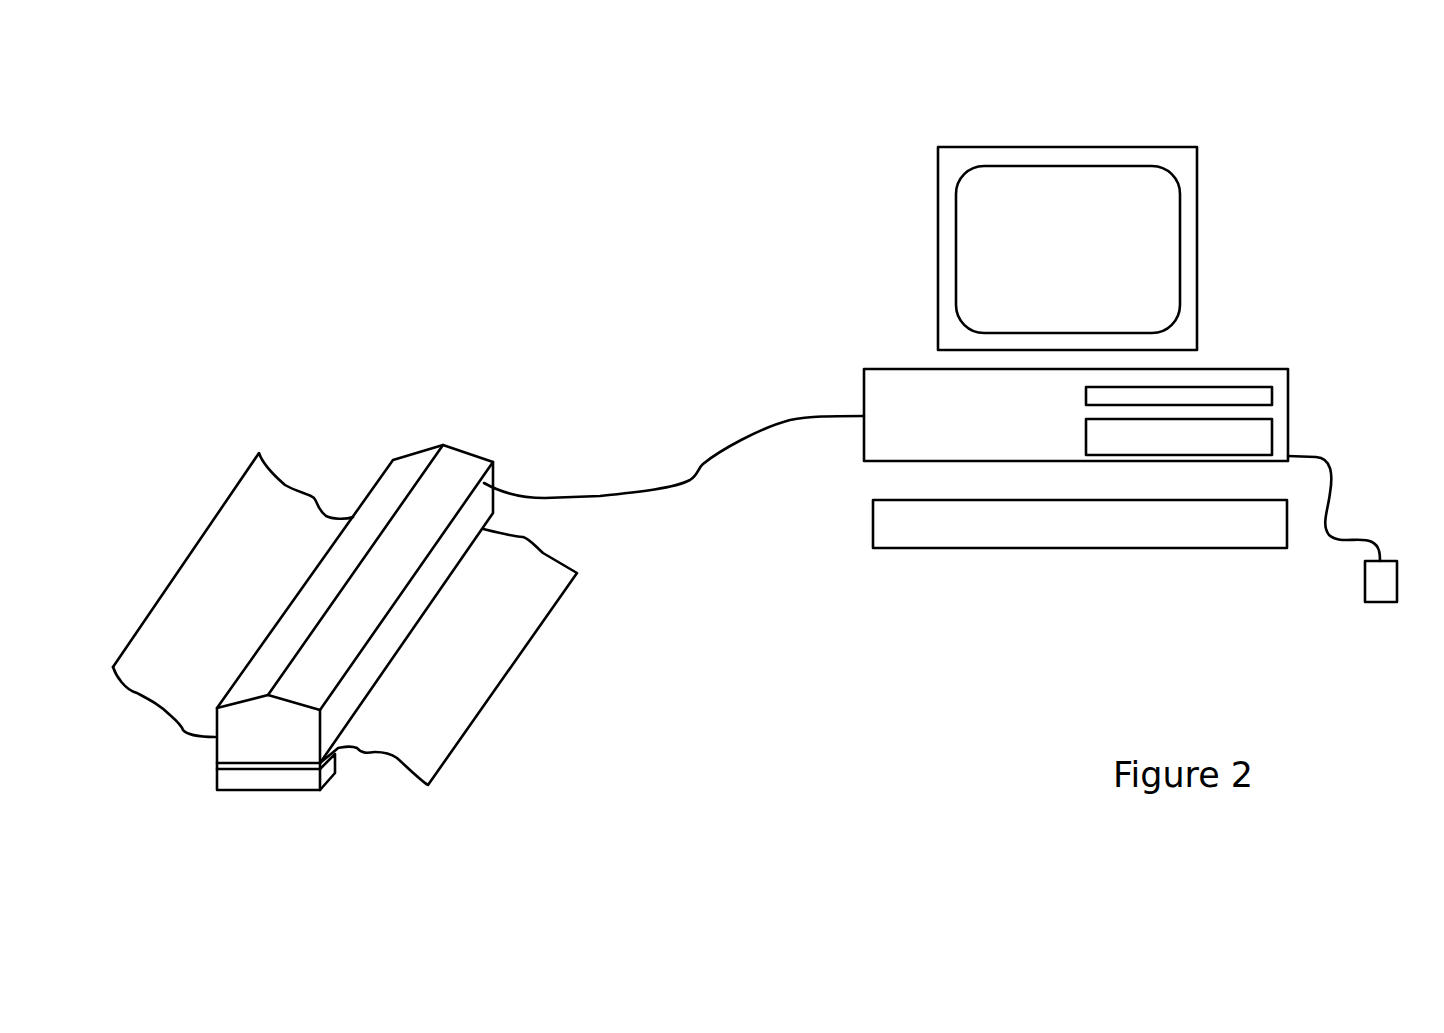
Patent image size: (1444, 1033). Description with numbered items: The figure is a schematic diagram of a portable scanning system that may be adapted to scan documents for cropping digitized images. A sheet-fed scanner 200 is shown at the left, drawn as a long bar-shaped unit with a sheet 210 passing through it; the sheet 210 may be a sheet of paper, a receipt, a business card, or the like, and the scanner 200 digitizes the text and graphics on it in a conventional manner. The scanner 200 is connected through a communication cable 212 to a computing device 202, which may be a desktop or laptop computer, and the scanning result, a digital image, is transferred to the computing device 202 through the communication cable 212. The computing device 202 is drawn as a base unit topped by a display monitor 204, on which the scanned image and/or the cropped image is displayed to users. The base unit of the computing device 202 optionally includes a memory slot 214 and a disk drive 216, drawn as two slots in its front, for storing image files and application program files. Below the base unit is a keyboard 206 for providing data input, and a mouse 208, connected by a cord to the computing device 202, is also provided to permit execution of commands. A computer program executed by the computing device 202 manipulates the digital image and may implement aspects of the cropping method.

The sheet-fed scanner 200 is at (448, 432).
The computing device 202 is at (1257, 325).
The display monitor 204 is at (1036, 186).
The keyboard 206 is at (887, 540).
The mouse 208 is at (1389, 592).
The sheet 210 is at (228, 546).
The communication cable 212 is at (702, 464).
The memory slot 214 is at (1264, 401).
The disk drive 216 is at (1265, 444).